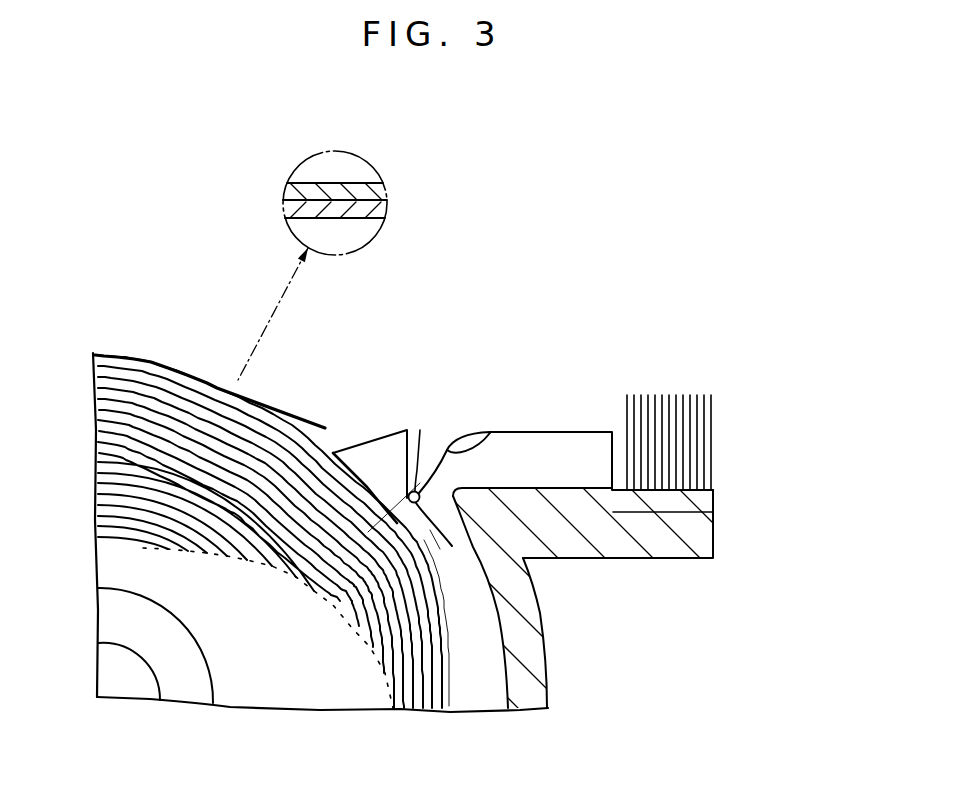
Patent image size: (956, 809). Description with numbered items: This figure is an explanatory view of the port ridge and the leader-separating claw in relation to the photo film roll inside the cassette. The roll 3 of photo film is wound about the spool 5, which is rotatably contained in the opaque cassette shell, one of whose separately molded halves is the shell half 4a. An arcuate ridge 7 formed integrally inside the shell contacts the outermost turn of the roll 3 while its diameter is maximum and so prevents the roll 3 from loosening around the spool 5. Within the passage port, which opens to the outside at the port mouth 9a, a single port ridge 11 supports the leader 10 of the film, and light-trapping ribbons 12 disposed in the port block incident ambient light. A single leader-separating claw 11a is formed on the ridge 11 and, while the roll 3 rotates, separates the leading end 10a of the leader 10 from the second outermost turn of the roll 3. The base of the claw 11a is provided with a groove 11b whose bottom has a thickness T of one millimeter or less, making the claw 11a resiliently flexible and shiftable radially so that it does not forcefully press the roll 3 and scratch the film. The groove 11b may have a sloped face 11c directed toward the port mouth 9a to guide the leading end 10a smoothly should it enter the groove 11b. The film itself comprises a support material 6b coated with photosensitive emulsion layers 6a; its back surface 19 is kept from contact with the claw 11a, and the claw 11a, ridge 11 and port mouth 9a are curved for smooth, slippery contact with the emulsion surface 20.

The roll 3 is at (133, 336).
The spool 5 is at (185, 688).
The photosensitive emulsion layers 6a is at (383, 207).
The support material 6b is at (383, 197).
The arcuate ridge 7 is at (478, 692).
The port mouth 9a is at (695, 537).
The leader 10 is at (205, 374).
The leading end 10a is at (327, 430).
The port ridge 11 is at (553, 447).
The leader-separating claw 11a is at (386, 434).
The groove 11b is at (420, 430).
The sloped face 11c is at (488, 432).
The light-trapping ribbons 12 is at (714, 440).
The back surface 19 is at (335, 182).
The emulsion surface 20 is at (338, 222).
The shell half 4a is at (533, 653).
The thickness T is at (409, 533).